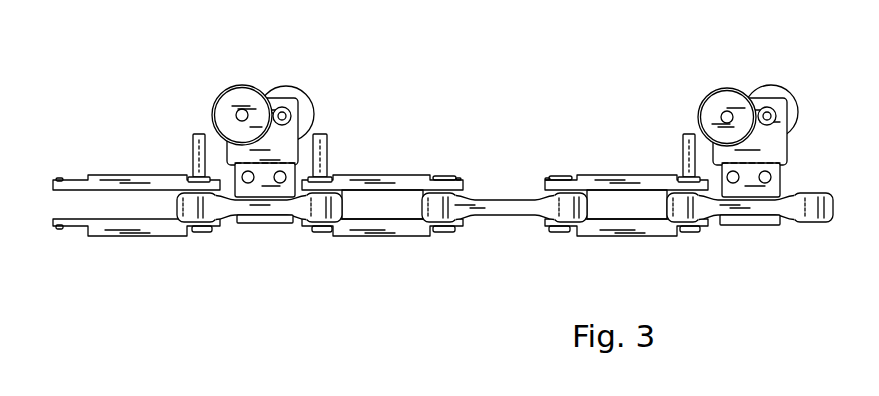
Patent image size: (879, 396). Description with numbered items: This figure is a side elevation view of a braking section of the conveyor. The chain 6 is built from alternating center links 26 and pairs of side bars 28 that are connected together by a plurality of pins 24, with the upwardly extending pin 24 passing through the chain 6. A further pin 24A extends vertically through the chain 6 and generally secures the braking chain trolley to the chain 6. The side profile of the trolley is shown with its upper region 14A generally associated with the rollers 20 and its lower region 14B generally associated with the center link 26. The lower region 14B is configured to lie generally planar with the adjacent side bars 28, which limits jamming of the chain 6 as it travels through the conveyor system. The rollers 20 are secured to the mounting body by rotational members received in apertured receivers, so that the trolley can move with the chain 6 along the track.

The chain 6 is at (443, 170).
The upper region 14A is at (283, 91).
The lower region 14B is at (255, 223).
The rollers 20 is at (223, 102).
The pin 24 is at (567, 176).
The pin 24A is at (318, 234).
The center link 26 is at (293, 222).
The side bars 28 is at (350, 228).